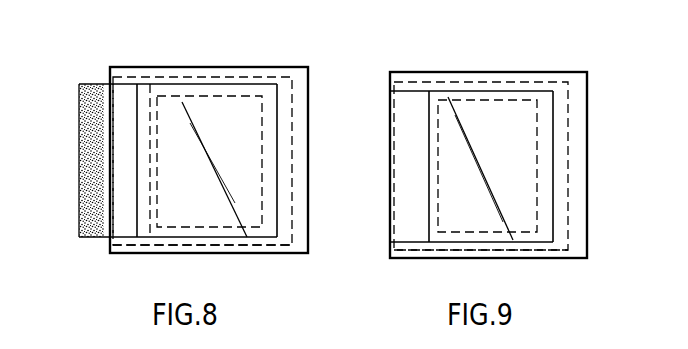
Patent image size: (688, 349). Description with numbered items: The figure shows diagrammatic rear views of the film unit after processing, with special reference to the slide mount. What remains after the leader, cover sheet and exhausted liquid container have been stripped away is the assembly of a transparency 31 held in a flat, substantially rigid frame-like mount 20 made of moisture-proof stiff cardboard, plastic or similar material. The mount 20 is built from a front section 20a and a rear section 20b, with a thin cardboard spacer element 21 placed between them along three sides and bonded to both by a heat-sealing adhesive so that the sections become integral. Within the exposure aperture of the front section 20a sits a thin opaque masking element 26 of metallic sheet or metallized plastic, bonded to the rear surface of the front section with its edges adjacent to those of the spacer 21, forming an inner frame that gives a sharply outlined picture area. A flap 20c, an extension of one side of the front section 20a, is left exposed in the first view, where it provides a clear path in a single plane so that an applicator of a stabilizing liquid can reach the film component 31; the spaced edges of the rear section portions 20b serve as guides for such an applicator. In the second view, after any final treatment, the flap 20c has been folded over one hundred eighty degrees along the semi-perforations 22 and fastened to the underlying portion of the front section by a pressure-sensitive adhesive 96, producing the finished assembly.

In FIG. 8, the mount 20 is at (234, 64).
In FIG. 9, the mount 20 is at (508, 72).
In FIG. 8, the front section 20a is at (126, 95).
In FIG. 8, the rear section 20b is at (277, 79).
In FIG. 9, the rear section 20b is at (544, 88).
In FIG. 8, the flap 20c is at (86, 239).
In FIG. 9, the flap 20c is at (402, 172).
In FIG. 8, the spacer element 21 is at (181, 80).
In FIG. 9, the spacer element 21 is at (455, 83).
In FIG. 8, the semi-perforations 22 is at (107, 82).
In FIG. 9, the semi-perforations 22 is at (390, 125).
In FIG. 8, the masking element 26 is at (157, 250).
In FIG. 9, the masking element 26 is at (540, 228).
In FIG. 8, the transparency 31 is at (234, 143).
In FIG. 9, the transparency 31 is at (514, 148).
In FIG. 8, the pressure-sensitive adhesive 96 is at (86, 146).